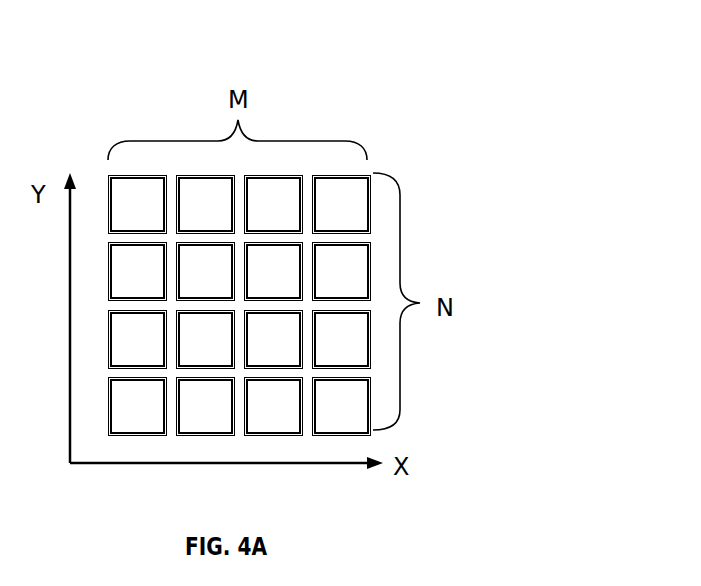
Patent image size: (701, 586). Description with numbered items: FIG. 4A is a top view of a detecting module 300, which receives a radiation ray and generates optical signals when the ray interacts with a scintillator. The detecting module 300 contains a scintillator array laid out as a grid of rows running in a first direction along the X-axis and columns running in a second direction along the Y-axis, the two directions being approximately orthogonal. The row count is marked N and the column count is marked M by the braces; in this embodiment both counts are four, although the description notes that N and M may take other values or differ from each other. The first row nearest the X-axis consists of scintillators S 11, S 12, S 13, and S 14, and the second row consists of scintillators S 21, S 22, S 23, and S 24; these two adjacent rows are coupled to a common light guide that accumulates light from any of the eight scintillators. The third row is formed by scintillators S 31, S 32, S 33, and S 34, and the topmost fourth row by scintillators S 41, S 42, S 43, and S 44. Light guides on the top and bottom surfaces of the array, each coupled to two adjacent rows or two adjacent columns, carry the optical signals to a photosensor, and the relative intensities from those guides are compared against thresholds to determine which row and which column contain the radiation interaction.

The detecting module 300 is at (282, 68).
The scintillator S11 11 is at (138, 407).
The scintillator S12 12 is at (206, 407).
The scintillator S13 13 is at (274, 407).
The scintillator S14 14 is at (342, 407).
The scintillator S21 21 is at (138, 340).
The scintillator S22 22 is at (206, 340).
The scintillator S23 23 is at (274, 340).
The scintillator S24 24 is at (342, 340).
The scintillator S31 31 is at (138, 272).
The scintillator S32 32 is at (206, 272).
The scintillator S33 33 is at (274, 272).
The scintillator S34 34 is at (342, 272).
The scintillator S41 41 is at (138, 205).
The scintillator S42 42 is at (206, 205).
The scintillator S43 43 is at (274, 205).
The scintillator S44 44 is at (342, 205).